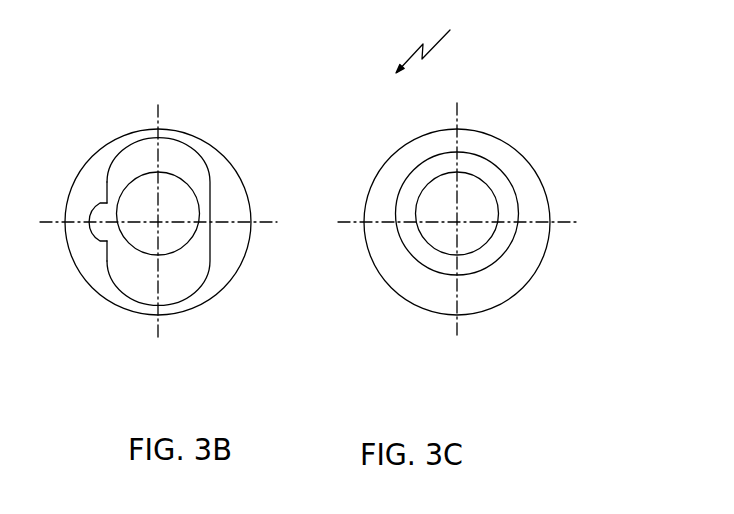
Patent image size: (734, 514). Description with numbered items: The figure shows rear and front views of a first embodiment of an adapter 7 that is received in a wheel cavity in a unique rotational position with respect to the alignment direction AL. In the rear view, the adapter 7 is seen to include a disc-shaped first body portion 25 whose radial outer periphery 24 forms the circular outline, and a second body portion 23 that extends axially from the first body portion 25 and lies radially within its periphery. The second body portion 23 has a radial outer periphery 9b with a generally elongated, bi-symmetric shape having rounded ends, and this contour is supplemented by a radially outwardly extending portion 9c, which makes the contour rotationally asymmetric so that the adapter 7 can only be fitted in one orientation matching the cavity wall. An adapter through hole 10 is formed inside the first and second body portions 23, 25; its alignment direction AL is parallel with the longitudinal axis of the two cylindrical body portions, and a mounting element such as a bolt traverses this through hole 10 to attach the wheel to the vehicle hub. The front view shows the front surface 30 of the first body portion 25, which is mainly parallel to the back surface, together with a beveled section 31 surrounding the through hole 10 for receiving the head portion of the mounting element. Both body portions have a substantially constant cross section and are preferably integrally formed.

In FIG. 3C, the adapter 7 is at (427, 42).
In FIG. 3B, the radial outer periphery 9b is at (108, 173).
In FIG. 3B, the radially outwardly extending portion 9c is at (91, 208).
In FIG. 3B, the alignment direction AL is at (158, 222).
In FIG. 3B, the second body portion 23 is at (182, 166).
In FIG. 3B, the radial outer periphery 24 is at (234, 167).
In FIG. 3B, the first body portion 25 is at (223, 213).
In FIG. 3B, the adapter through hole 10 is at (176, 233).
In FIG. 3C, the adapter through hole 10 is at (473, 234).
In FIG. 3C, the front surface 30 is at (497, 153).
In FIG. 3C, the beveled section 31 is at (500, 190).